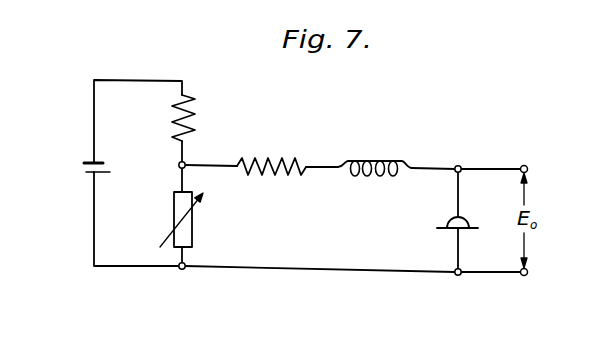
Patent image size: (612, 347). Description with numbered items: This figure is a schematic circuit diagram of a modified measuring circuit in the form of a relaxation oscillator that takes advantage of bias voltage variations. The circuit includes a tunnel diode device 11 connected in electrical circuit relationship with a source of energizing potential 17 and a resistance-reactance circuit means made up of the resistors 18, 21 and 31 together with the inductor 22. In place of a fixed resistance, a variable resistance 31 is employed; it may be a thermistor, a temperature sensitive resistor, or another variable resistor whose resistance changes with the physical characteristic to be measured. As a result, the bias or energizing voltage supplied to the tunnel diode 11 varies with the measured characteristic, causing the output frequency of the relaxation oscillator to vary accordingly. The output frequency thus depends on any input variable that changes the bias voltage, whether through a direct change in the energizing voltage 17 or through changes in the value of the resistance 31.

The source of energizing potential 17 is at (85, 172).
The resistor 18 is at (190, 106).
The variable resistance 31 is at (192, 231).
The resistor 21 is at (266, 157).
The inductor 22 is at (381, 160).
The tunnel diode device 11 is at (449, 231).